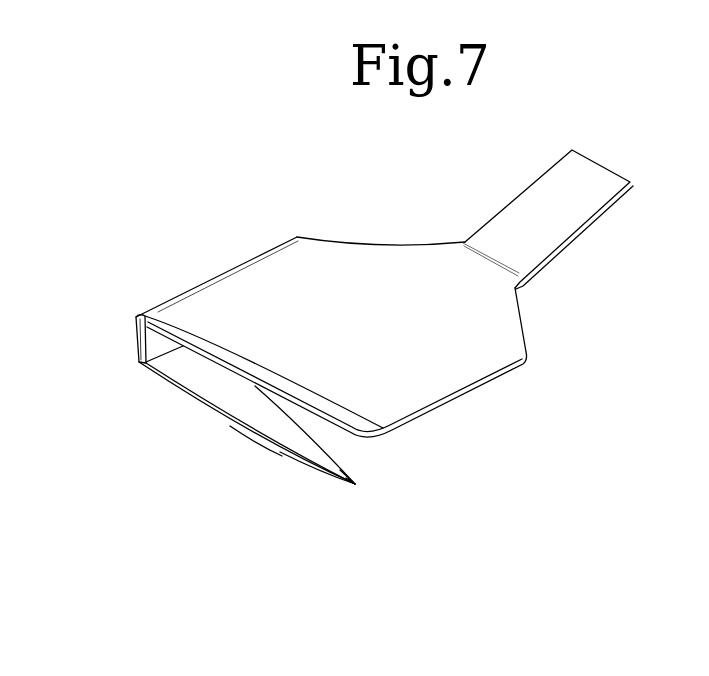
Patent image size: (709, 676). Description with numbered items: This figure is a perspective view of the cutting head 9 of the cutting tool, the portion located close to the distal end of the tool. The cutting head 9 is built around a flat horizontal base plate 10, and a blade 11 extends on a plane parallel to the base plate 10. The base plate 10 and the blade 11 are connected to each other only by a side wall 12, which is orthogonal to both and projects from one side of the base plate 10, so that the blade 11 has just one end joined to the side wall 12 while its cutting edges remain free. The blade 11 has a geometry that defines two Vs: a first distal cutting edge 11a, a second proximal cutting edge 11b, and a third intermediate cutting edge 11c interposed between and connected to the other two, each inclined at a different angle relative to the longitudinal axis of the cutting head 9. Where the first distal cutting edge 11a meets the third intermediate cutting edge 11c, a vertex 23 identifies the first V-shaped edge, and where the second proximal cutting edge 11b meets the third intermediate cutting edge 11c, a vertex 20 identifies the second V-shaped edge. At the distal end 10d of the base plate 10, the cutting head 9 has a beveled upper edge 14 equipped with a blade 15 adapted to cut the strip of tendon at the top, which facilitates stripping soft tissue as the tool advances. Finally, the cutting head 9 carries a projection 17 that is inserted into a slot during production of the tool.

The cutting head 9 is at (373, 228).
The base plate 10 is at (472, 333).
The distal end of the base plate 10d is at (333, 410).
The blade 11 is at (249, 415).
The first distal cutting edge 11a is at (212, 409).
The second proximal cutting edge 11b is at (335, 462).
The third intermediate cutting edge 11c is at (306, 466).
The side wall 12 is at (137, 345).
The beveled upper edge 14 is at (198, 335).
The blade 15 is at (186, 358).
The projection 17 is at (557, 220).
The vertex 20 is at (355, 484).
The vertex 23 is at (282, 457).